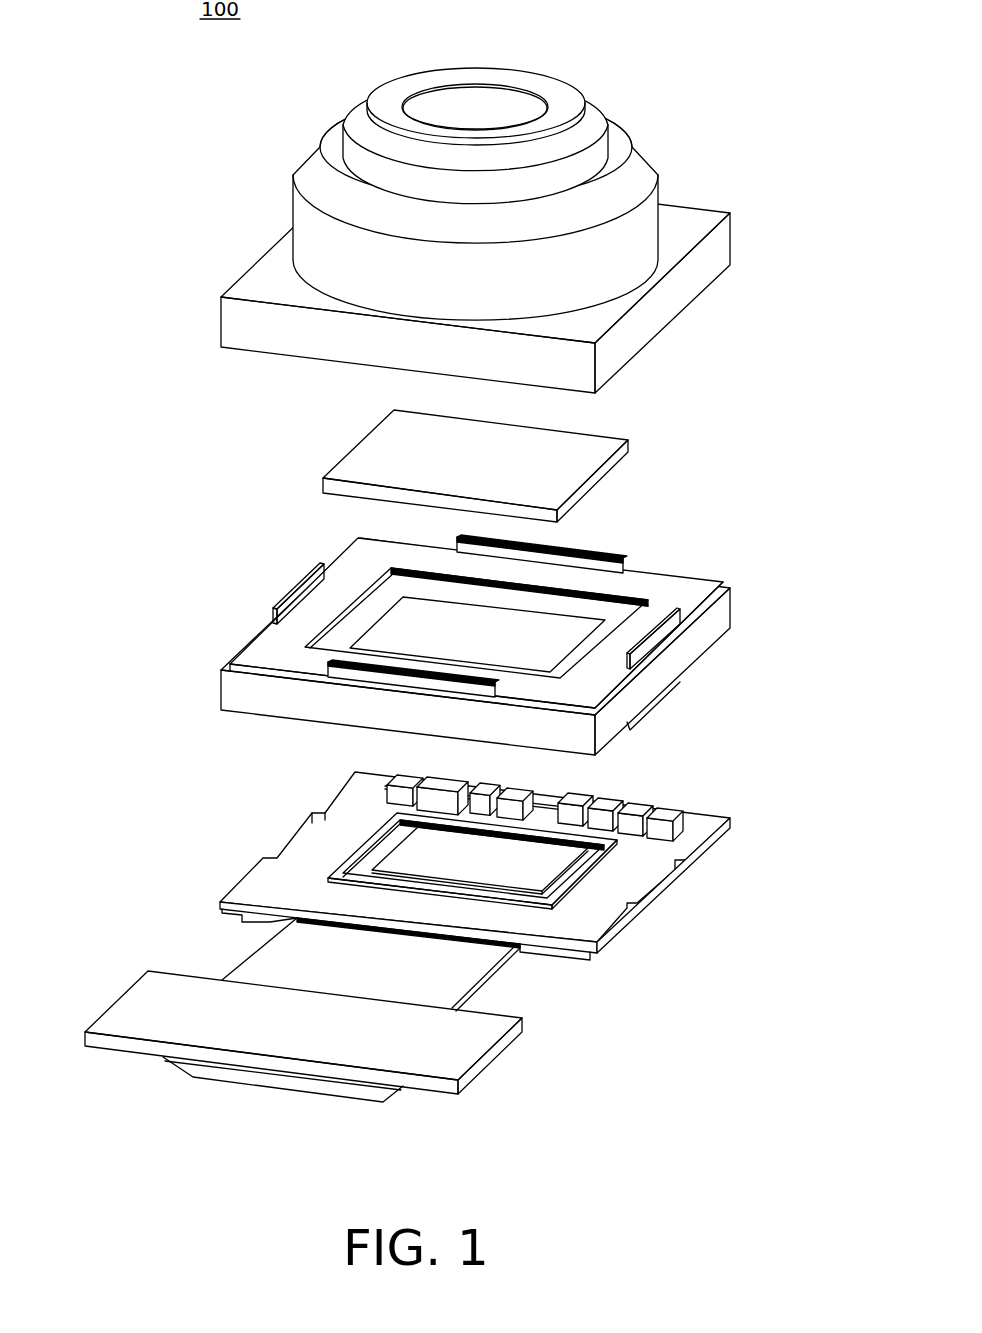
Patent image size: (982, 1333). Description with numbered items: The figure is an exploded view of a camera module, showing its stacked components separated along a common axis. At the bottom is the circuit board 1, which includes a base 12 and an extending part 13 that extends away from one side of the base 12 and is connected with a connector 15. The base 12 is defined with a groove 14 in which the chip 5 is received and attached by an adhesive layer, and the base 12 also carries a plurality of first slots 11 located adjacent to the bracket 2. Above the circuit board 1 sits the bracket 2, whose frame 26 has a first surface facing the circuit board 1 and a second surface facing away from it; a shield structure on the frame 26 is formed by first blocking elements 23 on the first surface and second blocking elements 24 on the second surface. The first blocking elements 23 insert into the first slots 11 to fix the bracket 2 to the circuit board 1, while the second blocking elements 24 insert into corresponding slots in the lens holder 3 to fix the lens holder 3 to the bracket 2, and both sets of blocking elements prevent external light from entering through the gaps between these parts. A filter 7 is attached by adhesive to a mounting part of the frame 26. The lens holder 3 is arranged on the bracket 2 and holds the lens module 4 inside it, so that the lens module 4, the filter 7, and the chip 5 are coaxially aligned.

The circuit board 1 is at (405, 937).
The bracket 2 is at (506, 645).
The lens holder 3 is at (667, 222).
The lens module 4 is at (498, 100).
The chip 5 is at (540, 862).
The filter 7 is at (588, 448).
The first slots 11 is at (293, 826).
The base 12 is at (290, 887).
The extending part 13 is at (224, 995).
The groove 14 is at (335, 866).
The connector 15 is at (235, 1077).
The first blocking elements 23 is at (653, 707).
The second blocking elements 24 is at (663, 630).
The frame 26 is at (667, 667).